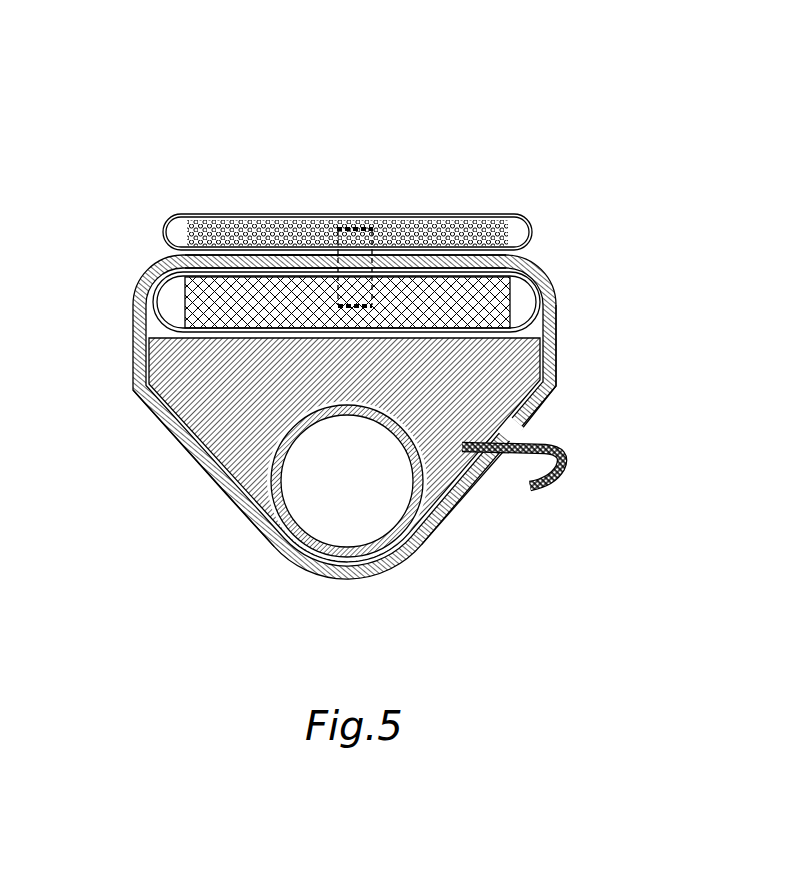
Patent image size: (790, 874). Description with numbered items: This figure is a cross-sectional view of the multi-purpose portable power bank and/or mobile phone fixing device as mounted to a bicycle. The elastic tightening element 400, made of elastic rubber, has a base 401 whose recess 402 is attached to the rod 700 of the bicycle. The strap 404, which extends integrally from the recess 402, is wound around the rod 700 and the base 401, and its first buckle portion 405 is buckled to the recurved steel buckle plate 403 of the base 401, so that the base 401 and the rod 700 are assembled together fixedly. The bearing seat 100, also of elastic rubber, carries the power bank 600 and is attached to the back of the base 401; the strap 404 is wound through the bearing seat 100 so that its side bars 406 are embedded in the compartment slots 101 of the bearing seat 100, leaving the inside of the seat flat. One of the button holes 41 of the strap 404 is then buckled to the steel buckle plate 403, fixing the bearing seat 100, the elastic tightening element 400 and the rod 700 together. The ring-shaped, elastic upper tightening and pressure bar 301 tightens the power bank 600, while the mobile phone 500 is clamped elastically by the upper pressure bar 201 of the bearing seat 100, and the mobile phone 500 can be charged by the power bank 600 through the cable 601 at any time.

The bearing seat 100 is at (543, 250).
The compartment slot 101 is at (232, 260).
The upper pressure bar 201 is at (182, 213).
The upper tightening and pressure bar 301 is at (556, 300).
The elastic tightening element 400 is at (118, 389).
The base 401 is at (543, 410).
The recess 402 is at (228, 496).
The steel buckle plate 403 is at (530, 485).
The strap 404 is at (176, 438).
The first buckle portion 405 is at (530, 437).
The side bar 406 is at (290, 262).
The button hole 41 is at (552, 449).
The mobile phone 500 is at (457, 214).
The power bank 600 is at (192, 296).
The cable 601 is at (398, 232).
The rod 700 is at (271, 551).